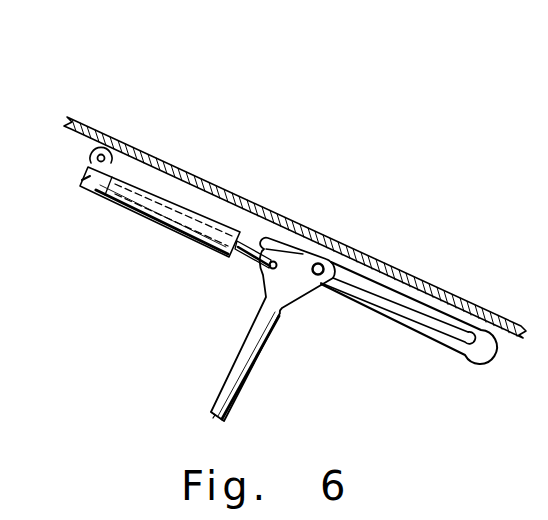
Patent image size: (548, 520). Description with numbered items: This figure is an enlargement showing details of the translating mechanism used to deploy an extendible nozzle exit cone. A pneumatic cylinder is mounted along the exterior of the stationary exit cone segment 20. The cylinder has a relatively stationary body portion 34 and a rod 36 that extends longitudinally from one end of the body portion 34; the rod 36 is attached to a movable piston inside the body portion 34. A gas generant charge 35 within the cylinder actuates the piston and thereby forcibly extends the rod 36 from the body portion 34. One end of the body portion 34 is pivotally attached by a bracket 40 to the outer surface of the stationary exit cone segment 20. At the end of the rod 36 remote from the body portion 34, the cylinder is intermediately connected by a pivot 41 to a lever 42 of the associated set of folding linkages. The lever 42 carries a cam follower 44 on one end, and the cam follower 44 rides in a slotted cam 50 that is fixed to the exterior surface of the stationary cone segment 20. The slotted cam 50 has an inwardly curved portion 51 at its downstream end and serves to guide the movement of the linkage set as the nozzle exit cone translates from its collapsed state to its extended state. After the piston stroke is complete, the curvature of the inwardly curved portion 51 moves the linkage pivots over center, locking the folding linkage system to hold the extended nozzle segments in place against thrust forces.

The stationary exit cone segment 20 is at (127, 138).
The body portion 34 is at (152, 196).
The gas generant charge 35 is at (86, 188).
The rod 36 is at (185, 242).
The bracket 40 is at (91, 159).
The pivot 41 is at (268, 268).
The lever 42 is at (255, 333).
The cam follower 44 is at (319, 263).
The slotted cam 50 is at (413, 310).
The inwardly curved portion 51 is at (472, 326).